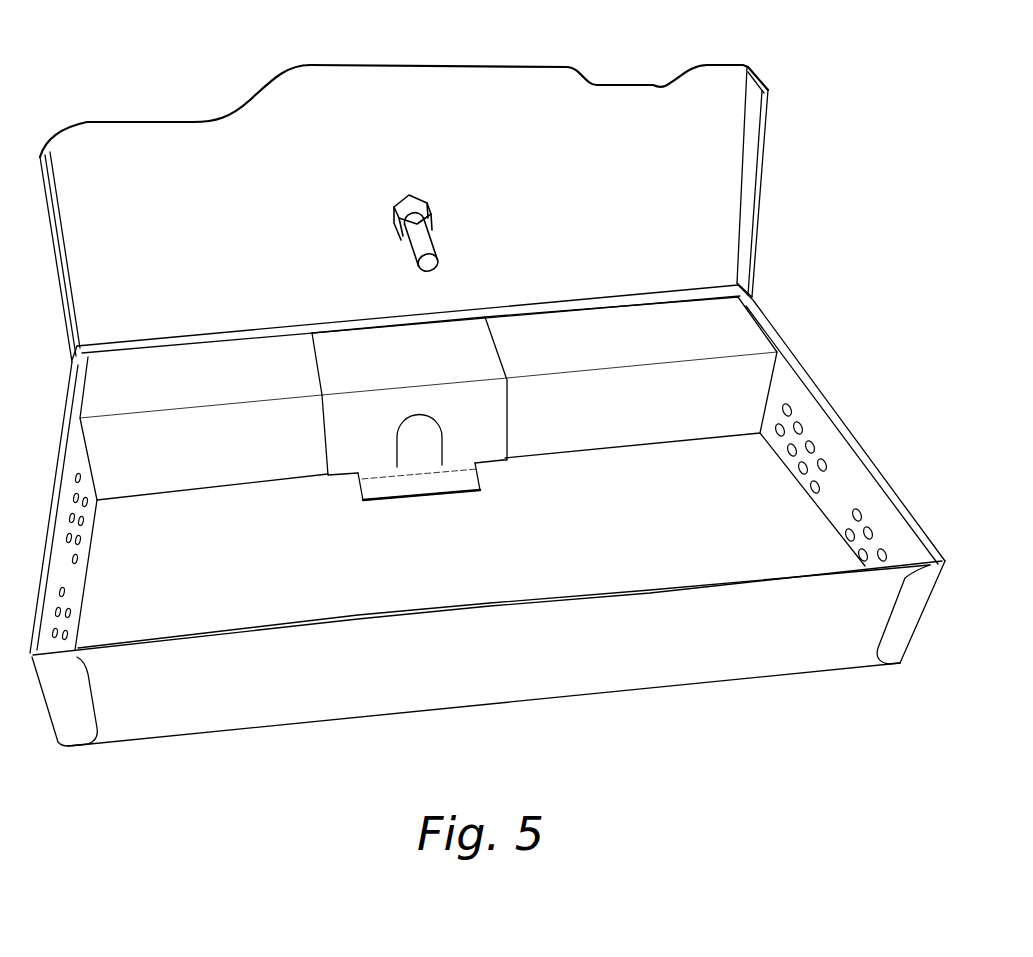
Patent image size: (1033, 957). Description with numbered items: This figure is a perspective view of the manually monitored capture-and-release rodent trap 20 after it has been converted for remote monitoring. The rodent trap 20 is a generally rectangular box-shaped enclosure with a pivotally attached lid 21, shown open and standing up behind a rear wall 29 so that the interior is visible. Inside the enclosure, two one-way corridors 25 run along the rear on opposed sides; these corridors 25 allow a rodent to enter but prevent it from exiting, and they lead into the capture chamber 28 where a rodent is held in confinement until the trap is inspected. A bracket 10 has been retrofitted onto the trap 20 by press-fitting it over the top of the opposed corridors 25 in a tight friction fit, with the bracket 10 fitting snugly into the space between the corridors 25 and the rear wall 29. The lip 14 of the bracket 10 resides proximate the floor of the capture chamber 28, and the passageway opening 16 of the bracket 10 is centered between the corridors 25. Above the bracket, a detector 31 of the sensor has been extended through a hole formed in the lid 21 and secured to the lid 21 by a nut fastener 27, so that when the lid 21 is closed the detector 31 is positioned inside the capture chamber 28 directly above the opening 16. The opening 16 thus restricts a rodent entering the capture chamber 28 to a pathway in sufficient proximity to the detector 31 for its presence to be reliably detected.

The bracket 10 is at (409, 407).
The lip 14 is at (383, 487).
The passageway opening 16 is at (433, 440).
The rodent trap 20 is at (866, 352).
The lid 21 is at (259, 130).
The one-way corridors 25 is at (203, 360).
The nut fastener 27 is at (449, 210).
The capture chamber 28 is at (512, 544).
The rear wall 29 is at (133, 347).
The detector 31 is at (438, 233).